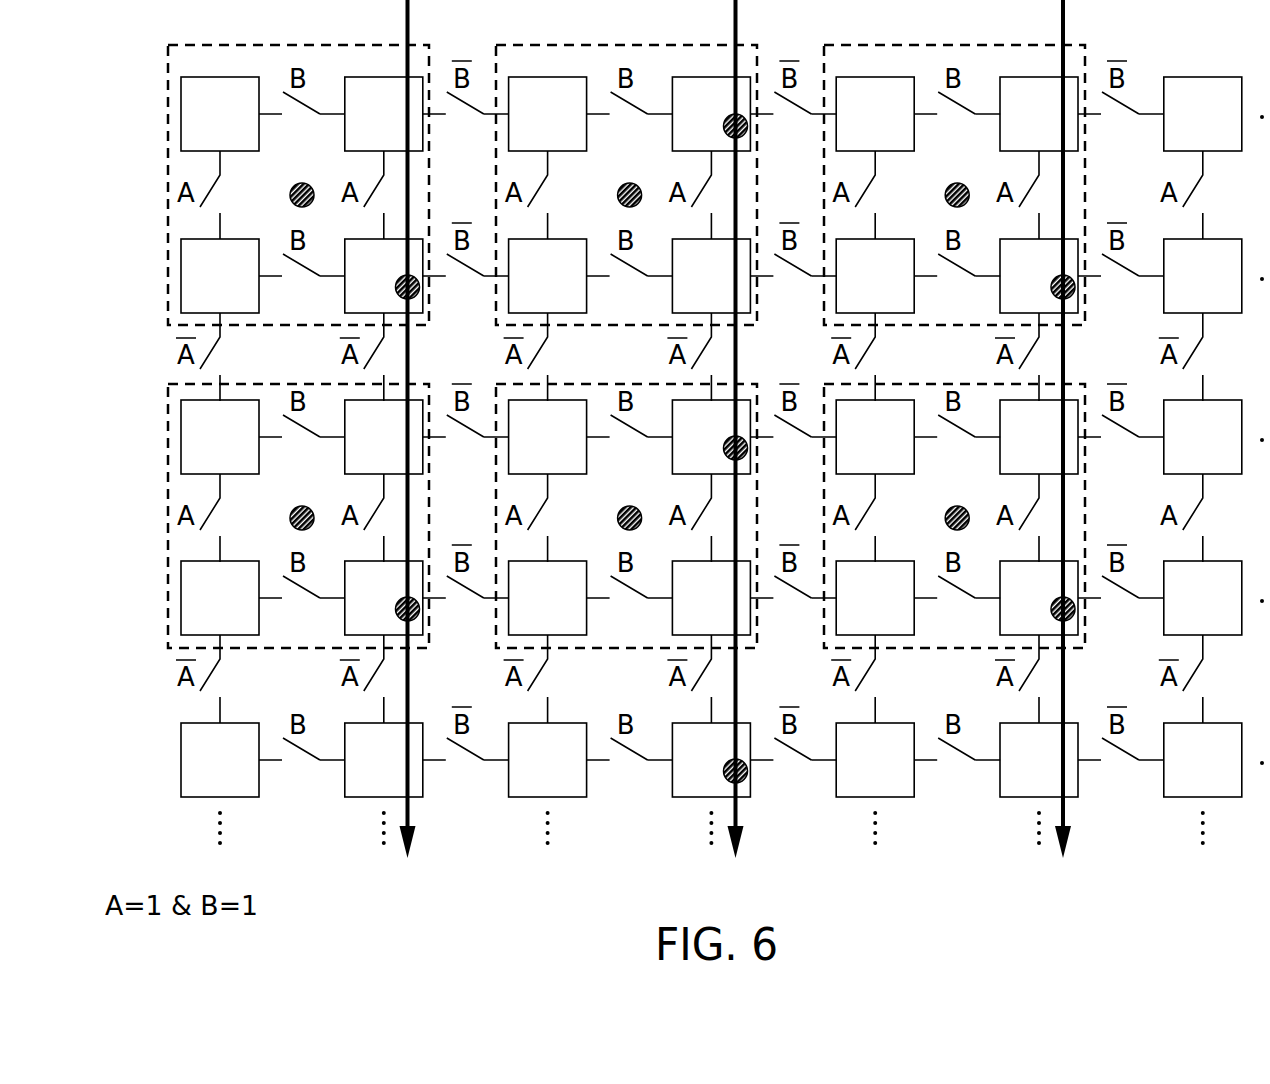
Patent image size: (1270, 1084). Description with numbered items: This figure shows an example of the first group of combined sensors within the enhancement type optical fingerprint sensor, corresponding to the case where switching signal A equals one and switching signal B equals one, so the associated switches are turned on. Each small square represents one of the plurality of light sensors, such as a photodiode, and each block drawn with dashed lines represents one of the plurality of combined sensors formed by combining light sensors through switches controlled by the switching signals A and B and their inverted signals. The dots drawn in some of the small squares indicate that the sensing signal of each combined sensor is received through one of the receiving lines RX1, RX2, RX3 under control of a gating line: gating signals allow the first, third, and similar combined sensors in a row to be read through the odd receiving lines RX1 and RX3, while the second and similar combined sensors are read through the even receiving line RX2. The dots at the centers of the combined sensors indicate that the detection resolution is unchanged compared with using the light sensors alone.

The receiving line RX1 is at (407, 448).
The receiving line RX2 is at (735, 448).
The receiving line RX3 is at (1063, 448).